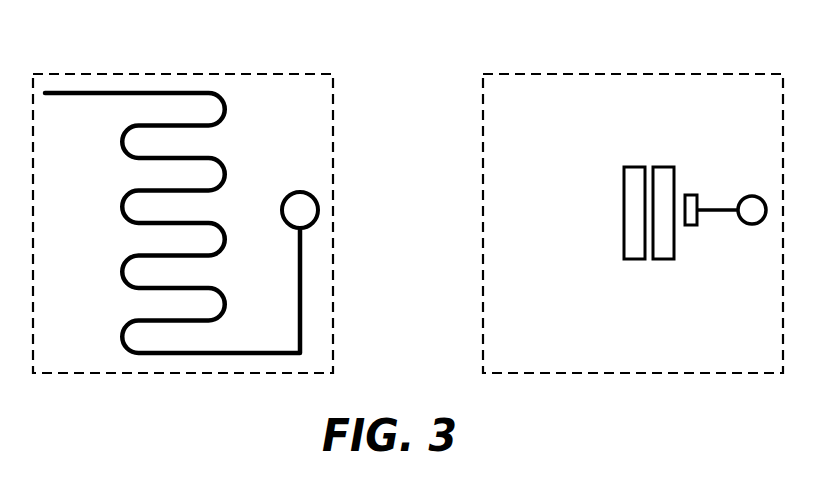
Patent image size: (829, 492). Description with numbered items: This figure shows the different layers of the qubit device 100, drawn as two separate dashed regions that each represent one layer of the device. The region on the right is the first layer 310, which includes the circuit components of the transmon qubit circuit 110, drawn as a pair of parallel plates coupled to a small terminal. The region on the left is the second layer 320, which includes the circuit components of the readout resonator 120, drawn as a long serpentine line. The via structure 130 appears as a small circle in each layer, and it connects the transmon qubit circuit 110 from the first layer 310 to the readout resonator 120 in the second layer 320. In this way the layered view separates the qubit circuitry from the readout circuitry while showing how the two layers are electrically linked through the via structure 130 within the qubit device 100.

The qubit device 100 is at (450, 161).
The transmon qubit circuit 110 is at (674, 198).
The readout resonator circuit 120 is at (138, 188).
The via structure 130 is at (305, 192).
The first layer 310 is at (558, 73).
The second layer 320 is at (118, 73).